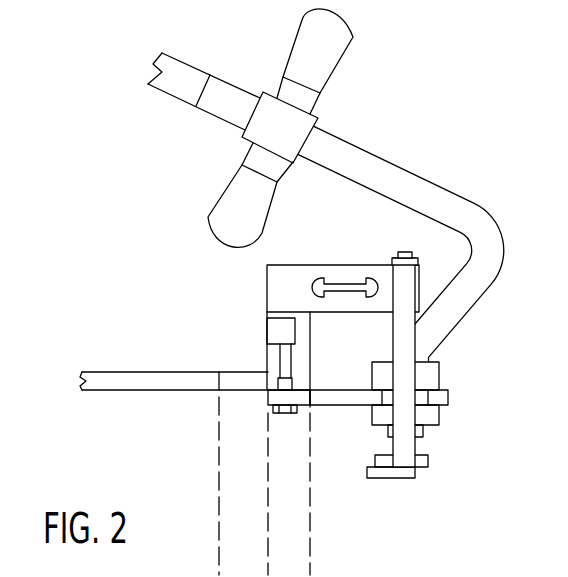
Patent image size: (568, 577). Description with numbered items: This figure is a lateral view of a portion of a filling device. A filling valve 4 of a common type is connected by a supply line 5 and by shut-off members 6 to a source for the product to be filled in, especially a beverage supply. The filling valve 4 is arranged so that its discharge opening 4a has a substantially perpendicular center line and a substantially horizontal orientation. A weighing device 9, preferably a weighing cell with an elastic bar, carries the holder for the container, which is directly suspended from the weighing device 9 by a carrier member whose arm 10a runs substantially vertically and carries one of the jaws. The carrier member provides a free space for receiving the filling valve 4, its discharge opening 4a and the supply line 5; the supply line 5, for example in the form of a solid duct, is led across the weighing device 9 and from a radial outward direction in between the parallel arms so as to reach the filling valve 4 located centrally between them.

The filling valve 4 is at (432, 373).
The discharge opening 4a is at (430, 427).
The supply line 5 is at (420, 176).
The shut-off members 6 is at (335, 46).
The weighing device 9 is at (304, 262).
The arm 10a is at (416, 445).